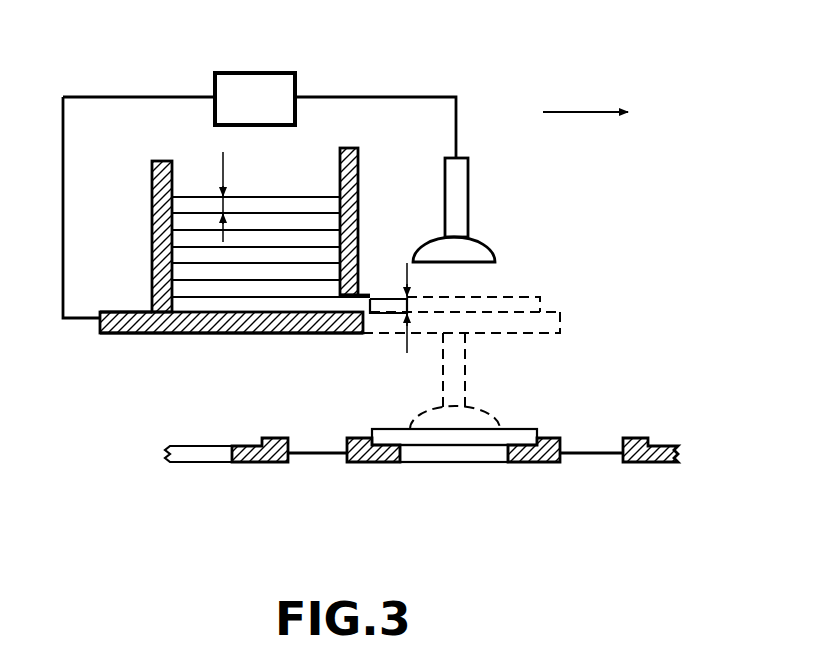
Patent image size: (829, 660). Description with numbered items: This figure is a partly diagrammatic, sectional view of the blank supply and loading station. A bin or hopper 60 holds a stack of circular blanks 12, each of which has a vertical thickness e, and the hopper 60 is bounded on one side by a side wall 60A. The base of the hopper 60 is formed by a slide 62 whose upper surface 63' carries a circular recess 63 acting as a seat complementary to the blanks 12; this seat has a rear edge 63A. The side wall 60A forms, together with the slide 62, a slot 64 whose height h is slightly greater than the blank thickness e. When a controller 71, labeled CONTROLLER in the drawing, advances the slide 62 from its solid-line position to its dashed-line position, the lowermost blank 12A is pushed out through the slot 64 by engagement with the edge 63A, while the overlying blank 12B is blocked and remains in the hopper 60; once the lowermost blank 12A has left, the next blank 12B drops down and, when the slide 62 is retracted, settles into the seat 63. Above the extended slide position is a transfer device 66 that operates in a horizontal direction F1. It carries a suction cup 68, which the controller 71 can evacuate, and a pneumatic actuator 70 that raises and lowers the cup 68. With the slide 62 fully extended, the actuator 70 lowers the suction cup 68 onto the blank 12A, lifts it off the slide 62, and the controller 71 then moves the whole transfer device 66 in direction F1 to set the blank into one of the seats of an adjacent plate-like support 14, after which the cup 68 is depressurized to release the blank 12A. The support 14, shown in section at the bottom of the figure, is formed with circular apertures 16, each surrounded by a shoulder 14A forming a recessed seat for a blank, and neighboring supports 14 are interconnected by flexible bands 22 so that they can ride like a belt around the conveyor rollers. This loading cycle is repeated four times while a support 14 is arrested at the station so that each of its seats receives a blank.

The hopper 60 is at (286, 218).
The side wall 60A is at (357, 165).
The controller 71 is at (272, 98).
The controller CONTROLLER is at (297, 85).
The horizontal direction F1 is at (585, 110).
The pneumatic actuator 70 is at (457, 172).
The transfer device 66 is at (507, 180).
The suction cup 68 is at (470, 247).
The circular blanks 12 is at (300, 200).
The lowermost blank 12A is at (328, 300).
The overlying blank 12B is at (247, 288).
The blank thickness e is at (249, 189).
The slot height h is at (407, 307).
The slot 64 is at (366, 285).
The slide 62 is at (354, 323).
The circular recess 63 is at (387, 367).
The upper surface 63' is at (117, 267).
The rear edge 63A is at (180, 333).
The plate-like support 14 is at (545, 455).
The shoulder 14A is at (643, 440).
The circular aperture 16 is at (427, 455).
The flexible bands 22 is at (590, 455).